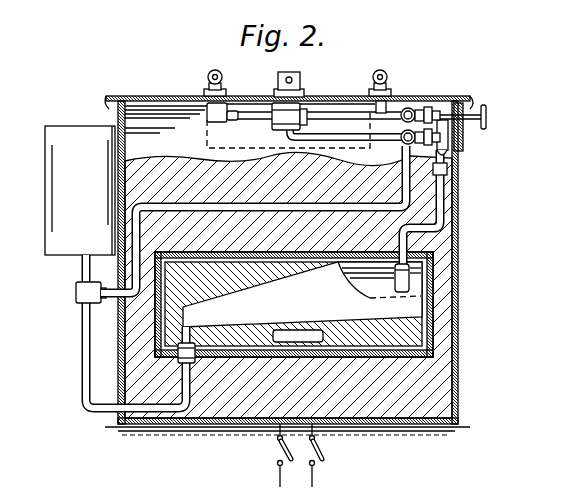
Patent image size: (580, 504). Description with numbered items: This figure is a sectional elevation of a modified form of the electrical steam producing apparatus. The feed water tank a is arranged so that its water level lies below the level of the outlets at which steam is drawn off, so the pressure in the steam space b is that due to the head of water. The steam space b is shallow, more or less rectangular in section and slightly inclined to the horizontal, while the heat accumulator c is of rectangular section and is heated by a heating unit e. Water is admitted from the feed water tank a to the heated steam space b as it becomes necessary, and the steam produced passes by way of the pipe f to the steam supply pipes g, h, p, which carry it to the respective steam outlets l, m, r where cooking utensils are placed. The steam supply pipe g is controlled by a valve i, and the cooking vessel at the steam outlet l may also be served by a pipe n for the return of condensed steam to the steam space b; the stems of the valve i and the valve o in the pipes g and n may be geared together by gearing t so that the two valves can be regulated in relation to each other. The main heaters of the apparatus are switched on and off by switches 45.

The feed water tank a is at (80, 190).
The steam space b is at (302, 294).
The heat accumulator c is at (125, 318).
The heating unit e is at (436, 318).
The pipe f is at (445, 183).
The steam supply pipe g is at (333, 117).
The steam supply pipe h is at (242, 115).
The valve i is at (413, 98).
The steam outlet l is at (301, 81).
The steam outlet m is at (207, 73).
The pipe n is at (338, 136).
The valve o is at (402, 142).
The steam supply pipe p is at (428, 105).
The steam outlet r is at (389, 71).
The gearing t is at (461, 142).
The switches 45 is at (325, 448).